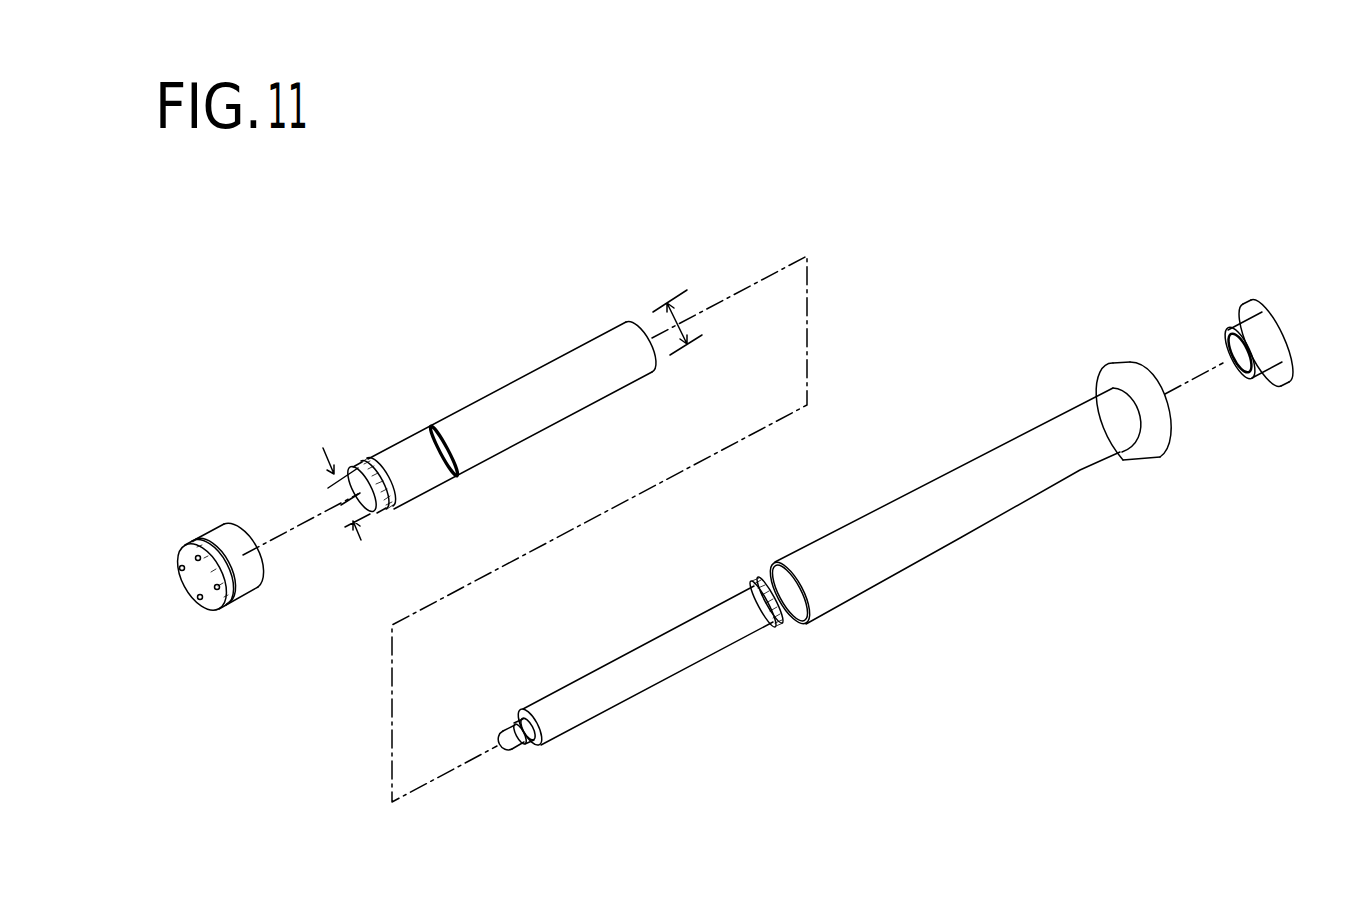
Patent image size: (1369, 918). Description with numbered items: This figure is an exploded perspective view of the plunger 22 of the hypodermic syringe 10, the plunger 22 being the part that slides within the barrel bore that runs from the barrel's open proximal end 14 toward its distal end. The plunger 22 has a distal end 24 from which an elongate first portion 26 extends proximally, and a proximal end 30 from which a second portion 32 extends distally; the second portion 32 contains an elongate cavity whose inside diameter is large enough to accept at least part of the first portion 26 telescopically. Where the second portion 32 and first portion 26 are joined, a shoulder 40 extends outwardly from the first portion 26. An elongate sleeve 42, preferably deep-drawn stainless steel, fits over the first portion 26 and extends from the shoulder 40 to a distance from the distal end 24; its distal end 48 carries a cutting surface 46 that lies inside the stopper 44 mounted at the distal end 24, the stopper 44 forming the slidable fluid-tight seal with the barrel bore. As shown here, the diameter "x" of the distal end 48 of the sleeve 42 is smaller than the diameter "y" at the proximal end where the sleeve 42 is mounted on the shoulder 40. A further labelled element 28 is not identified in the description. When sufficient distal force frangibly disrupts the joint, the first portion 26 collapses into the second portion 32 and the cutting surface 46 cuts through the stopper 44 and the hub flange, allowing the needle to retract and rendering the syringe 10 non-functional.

The plunger 22 is at (1031, 147).
The open proximal end 14 is at (1270, 302).
The distal end 24 is at (517, 757).
The first portion 26 is at (647, 647).
The collar 28 is at (770, 490).
The proximal end 30 is at (1160, 458).
The second portion 32 is at (863, 513).
The shoulder 40 is at (795, 627).
The hypodermic syringe 10 is at (647, 260).
The sleeve 42 is at (507, 383).
The stopper 44 is at (203, 545).
The cutting surface 46 is at (356, 465).
The distal end 48 is at (373, 513).